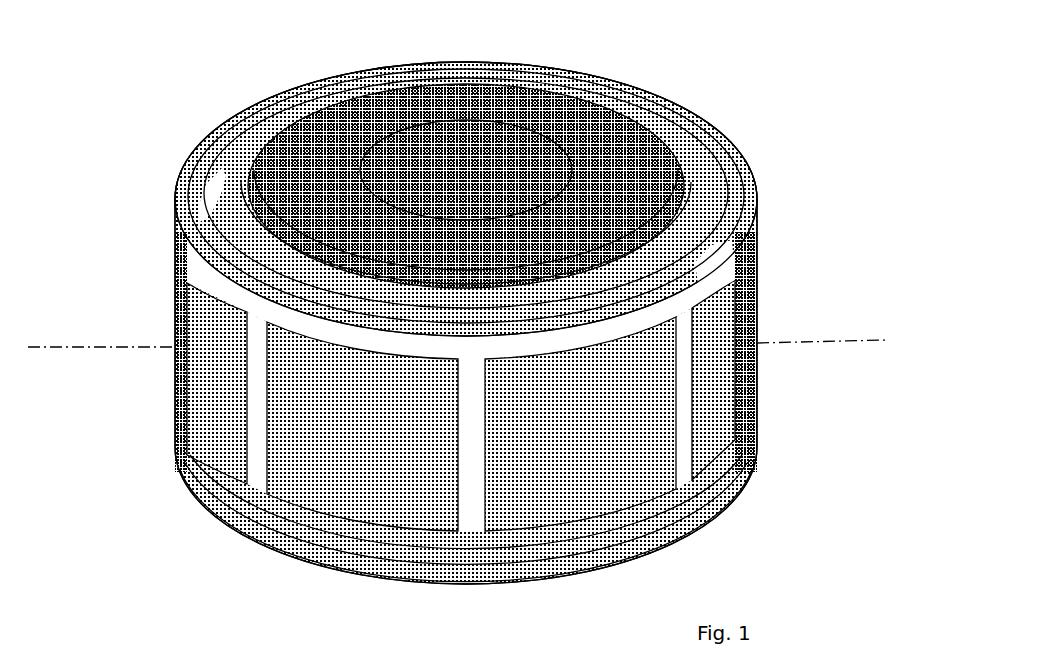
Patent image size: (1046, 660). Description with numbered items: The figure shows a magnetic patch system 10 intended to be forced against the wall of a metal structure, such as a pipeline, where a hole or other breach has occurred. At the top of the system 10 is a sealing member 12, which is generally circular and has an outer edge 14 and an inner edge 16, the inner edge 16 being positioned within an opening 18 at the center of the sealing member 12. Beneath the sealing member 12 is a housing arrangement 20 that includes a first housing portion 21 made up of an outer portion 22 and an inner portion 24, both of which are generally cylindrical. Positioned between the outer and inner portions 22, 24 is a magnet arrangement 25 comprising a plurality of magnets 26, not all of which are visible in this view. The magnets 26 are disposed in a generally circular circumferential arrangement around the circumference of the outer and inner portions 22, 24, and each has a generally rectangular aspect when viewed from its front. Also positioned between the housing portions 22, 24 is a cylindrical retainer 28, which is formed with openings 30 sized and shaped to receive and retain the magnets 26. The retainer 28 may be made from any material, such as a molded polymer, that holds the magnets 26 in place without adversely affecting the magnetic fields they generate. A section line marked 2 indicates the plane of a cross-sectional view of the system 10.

The magnetic patch system 10 is at (782, 120).
The sealing member 12 is at (572, 118).
The outer edge 14 is at (313, 230).
The inner edge 16 is at (453, 128).
The opening 18 is at (507, 133).
The housing arrangement 20 is at (137, 138).
The first housing portion 21 is at (173, 485).
The outer portion 22 is at (760, 372).
The inner portion 24 is at (250, 132).
The magnet arrangement 25 is at (210, 397).
The magnets 26 is at (210, 373).
The retainer 28 is at (473, 530).
The openings 30 is at (222, 518).
The section line 2- 2 is at (30, 345).